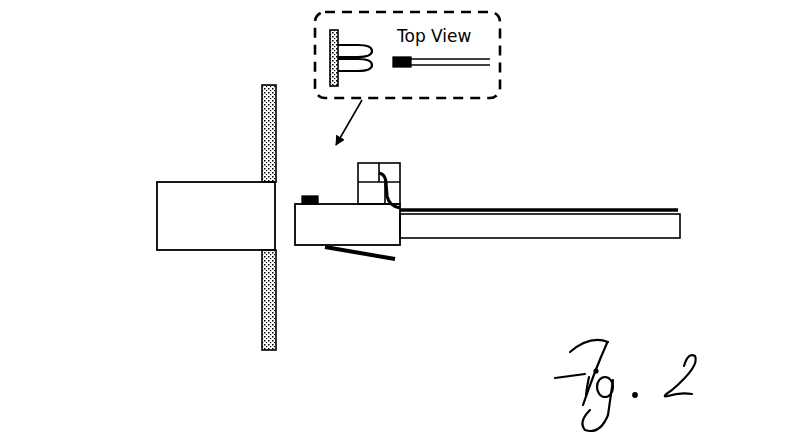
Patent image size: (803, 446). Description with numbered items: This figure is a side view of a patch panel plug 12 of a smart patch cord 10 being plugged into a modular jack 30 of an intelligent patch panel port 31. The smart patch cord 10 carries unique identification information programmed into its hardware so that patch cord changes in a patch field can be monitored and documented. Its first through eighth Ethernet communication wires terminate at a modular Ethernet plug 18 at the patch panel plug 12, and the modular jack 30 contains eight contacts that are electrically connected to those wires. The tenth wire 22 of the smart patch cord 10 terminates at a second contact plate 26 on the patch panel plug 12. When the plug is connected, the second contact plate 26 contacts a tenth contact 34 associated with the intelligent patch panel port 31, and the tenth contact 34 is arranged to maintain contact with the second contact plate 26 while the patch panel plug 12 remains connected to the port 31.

The smart patch cord 10 is at (631, 191).
The patch panel plug 12 is at (414, 163).
The RJ-45 plug 18 is at (397, 240).
The tenth wire 22 is at (525, 208).
The second contact plate 26 is at (368, 162).
The modular jack 30 is at (174, 250).
The port 31 is at (304, 284).
The tenth contact 34 is at (289, 174).